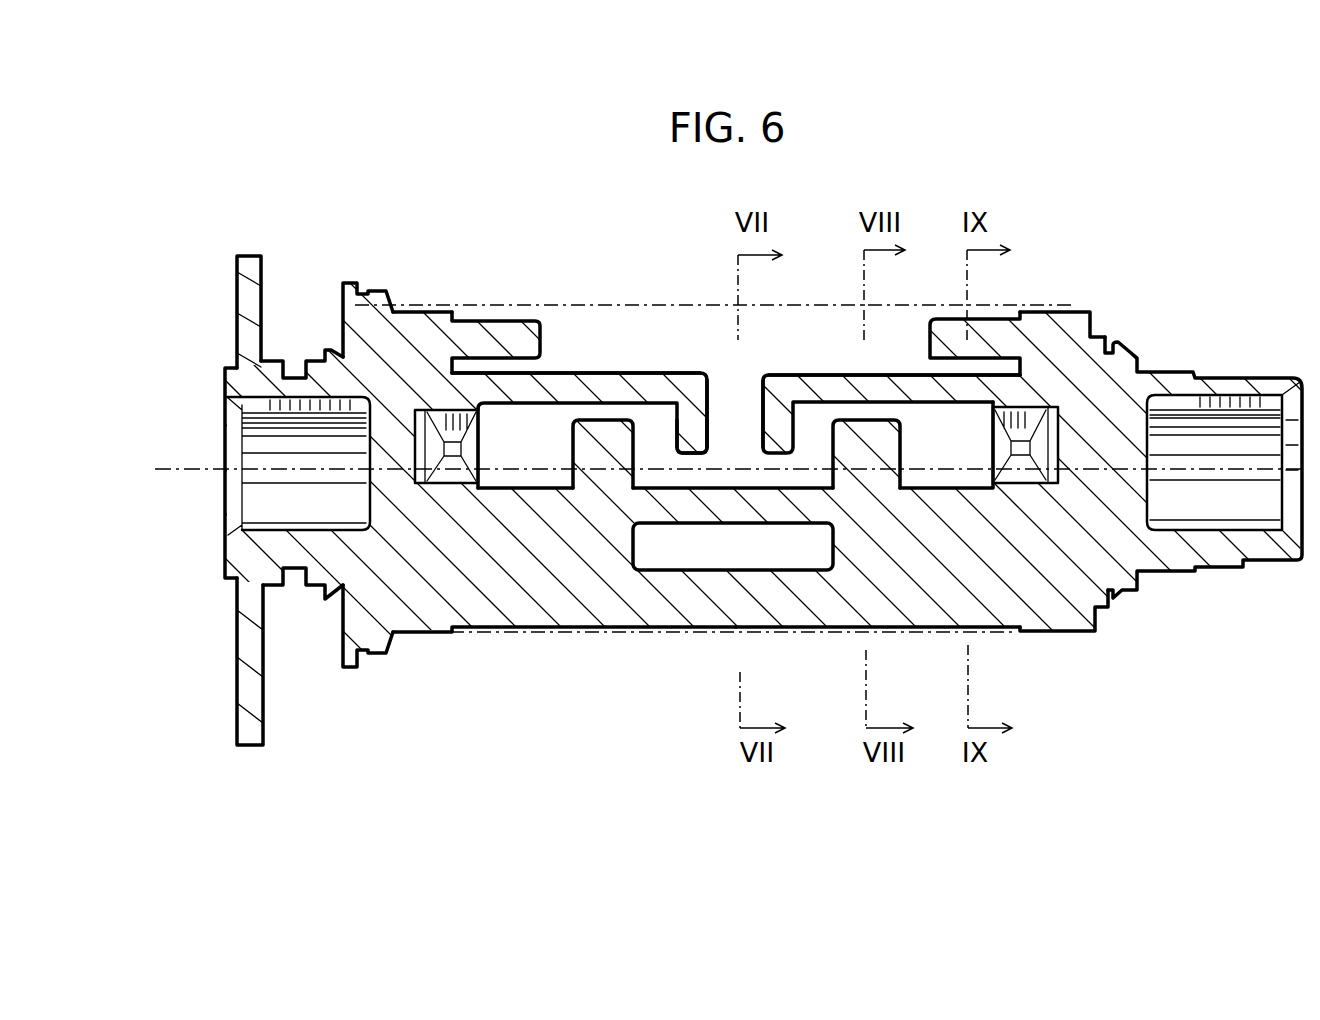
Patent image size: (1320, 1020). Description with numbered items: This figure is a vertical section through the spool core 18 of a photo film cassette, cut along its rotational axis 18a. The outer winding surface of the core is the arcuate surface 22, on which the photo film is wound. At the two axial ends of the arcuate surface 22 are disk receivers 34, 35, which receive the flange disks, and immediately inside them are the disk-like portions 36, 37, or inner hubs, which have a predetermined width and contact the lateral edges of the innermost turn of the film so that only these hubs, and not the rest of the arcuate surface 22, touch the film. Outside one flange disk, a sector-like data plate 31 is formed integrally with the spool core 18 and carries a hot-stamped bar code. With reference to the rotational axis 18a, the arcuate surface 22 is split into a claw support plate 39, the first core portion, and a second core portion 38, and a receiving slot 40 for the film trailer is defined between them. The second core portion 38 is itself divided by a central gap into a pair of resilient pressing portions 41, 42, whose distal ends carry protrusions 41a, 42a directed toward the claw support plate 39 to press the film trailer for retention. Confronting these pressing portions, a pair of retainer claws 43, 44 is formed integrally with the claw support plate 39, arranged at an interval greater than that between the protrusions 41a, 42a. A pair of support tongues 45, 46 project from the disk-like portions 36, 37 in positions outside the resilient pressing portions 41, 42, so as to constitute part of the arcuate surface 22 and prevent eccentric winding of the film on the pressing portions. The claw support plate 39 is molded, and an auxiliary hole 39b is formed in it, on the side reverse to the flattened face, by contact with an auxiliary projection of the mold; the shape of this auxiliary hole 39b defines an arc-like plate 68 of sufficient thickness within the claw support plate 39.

The spool core 18 is at (244, 250).
The rotational axis 18a is at (175, 472).
The arcuate surface 22 is at (523, 634).
The sector-like data plate 31 is at (248, 707).
The disk receiver 34 is at (362, 292).
The disk receiver 35 is at (1113, 348).
The disk-like portion 36 is at (426, 313).
The disk-like portion 37 is at (1063, 312).
The second core portion 38 is at (810, 278).
The claw support plate 39 is at (587, 607).
The auxiliary hole 39b is at (701, 565).
The receiving slot 40 is at (519, 405).
The resilient pressing portion 41 is at (667, 390).
The protrusion 41a is at (693, 445).
The resilient pressing portion 42 is at (795, 388).
The protrusion 42a is at (760, 443).
The retainer claw 43 is at (597, 428).
The retainer claw 44 is at (887, 432).
The support tongue 45 is at (521, 338).
The support tongue 46 is at (937, 331).
The arc-like plate 68 is at (810, 607).